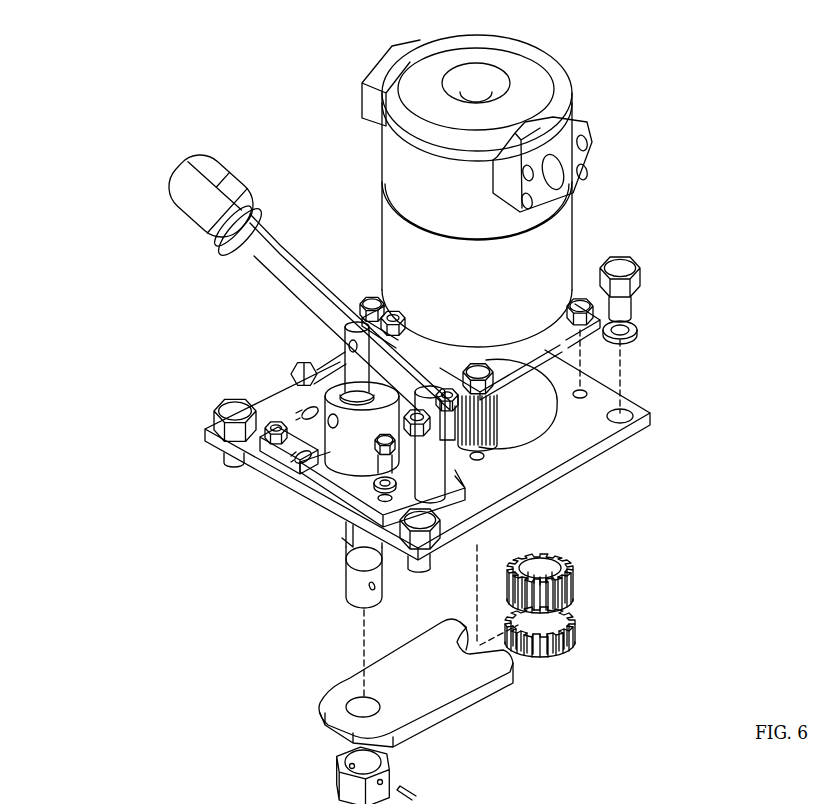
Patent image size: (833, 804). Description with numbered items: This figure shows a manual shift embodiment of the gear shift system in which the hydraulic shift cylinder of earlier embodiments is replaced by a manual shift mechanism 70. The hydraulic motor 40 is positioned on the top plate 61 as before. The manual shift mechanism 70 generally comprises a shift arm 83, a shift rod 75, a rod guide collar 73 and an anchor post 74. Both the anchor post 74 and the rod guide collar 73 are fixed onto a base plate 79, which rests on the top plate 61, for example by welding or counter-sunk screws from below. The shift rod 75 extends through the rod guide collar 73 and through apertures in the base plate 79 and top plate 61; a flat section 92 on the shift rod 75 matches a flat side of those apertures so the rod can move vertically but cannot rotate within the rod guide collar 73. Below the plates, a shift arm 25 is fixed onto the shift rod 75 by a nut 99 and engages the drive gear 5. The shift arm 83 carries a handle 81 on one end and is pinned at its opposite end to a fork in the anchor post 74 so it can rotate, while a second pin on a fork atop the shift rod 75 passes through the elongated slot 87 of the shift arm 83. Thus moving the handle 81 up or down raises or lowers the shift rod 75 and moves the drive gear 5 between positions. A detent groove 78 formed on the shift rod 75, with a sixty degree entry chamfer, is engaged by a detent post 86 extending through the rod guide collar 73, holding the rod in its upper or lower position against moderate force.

The hydraulic motor 40 is at (540, 50).
The handle 81 is at (192, 160).
The shift arm 83 is at (257, 248).
The elongated slot 87 is at (342, 328).
The rod guide collar 73 is at (350, 455).
The detent groove 78 is at (353, 400).
The detent post 86 is at (295, 460).
The anchor post 74 is at (437, 467).
The base plate 79 is at (455, 503).
The manual shift mechanism 70 is at (403, 461).
The top plate 61 is at (635, 445).
The flat section 92 is at (343, 543).
The shift rod 75 is at (347, 587).
The shift arm 25 is at (447, 683).
The drive gear 5 is at (567, 557).
The nut 99 is at (335, 773).